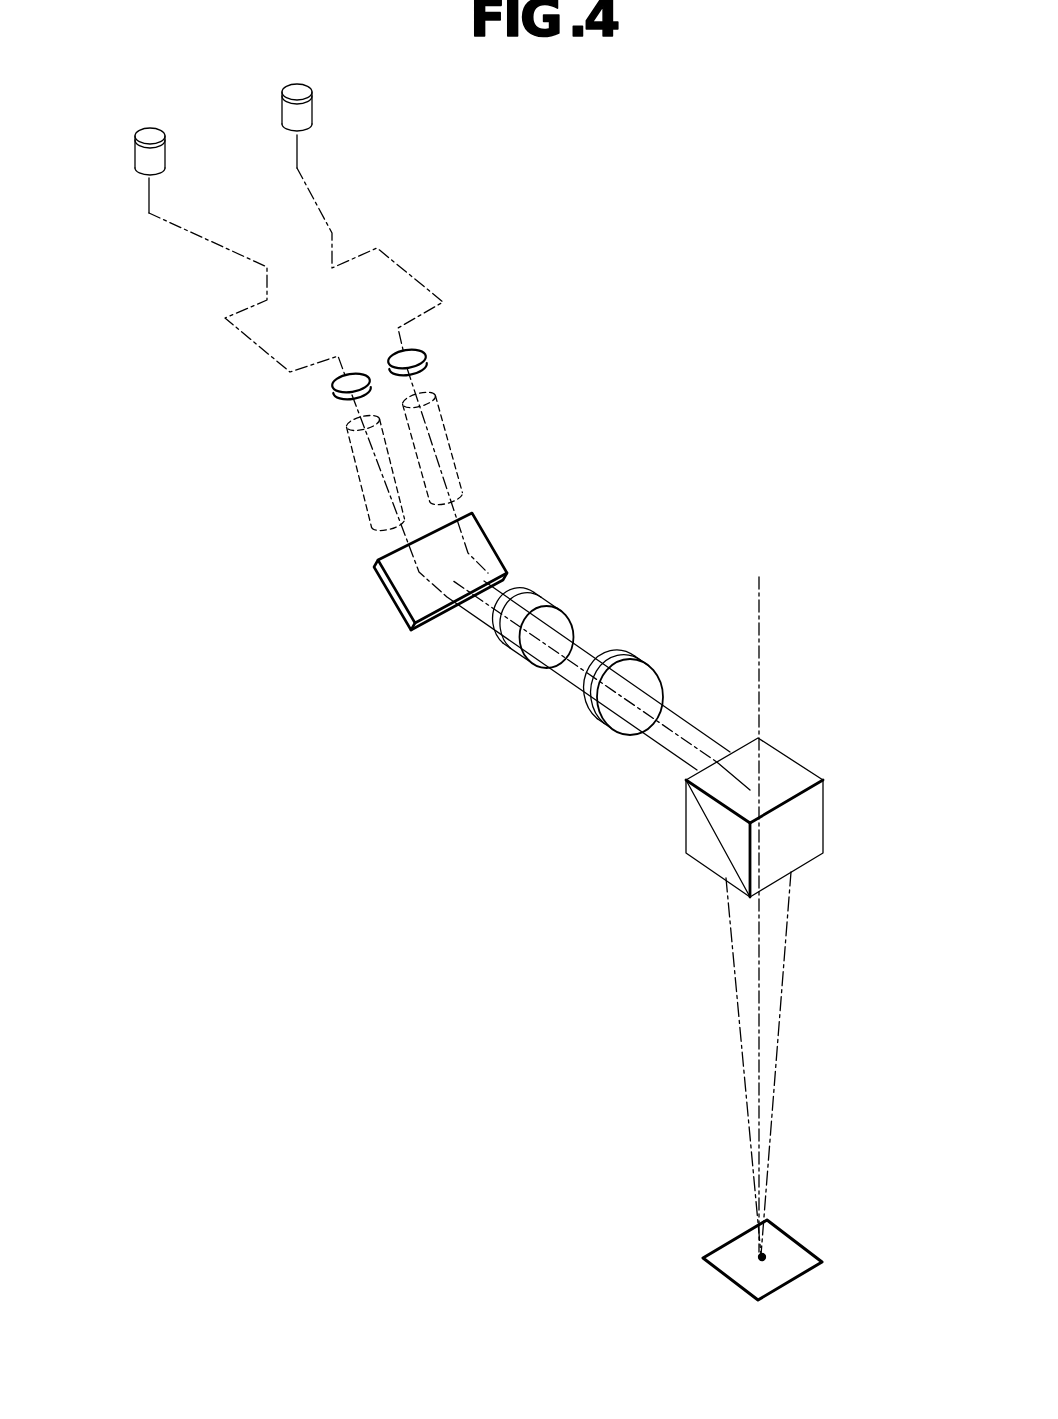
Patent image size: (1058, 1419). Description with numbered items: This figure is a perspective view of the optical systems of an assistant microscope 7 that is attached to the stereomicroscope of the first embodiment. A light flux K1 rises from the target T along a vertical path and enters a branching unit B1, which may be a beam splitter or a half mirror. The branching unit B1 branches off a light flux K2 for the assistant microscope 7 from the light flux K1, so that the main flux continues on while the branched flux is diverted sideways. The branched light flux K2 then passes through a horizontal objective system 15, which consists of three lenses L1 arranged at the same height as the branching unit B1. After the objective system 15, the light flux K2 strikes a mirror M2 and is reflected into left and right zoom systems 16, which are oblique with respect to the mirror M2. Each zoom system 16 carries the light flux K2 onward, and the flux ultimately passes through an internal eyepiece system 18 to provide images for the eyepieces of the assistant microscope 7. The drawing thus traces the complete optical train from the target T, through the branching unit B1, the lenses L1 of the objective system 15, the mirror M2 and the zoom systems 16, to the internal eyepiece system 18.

The assistant microscope 7 is at (516, 421).
The internal eyepiece system 18 is at (296, 381).
The zoom systems 16 is at (295, 388).
The mirror M2 is at (397, 603).
The light flux K2 is at (694, 722).
The horizontal objective system 15 is at (632, 788).
The lenses L1 is at (528, 588).
The branching unit B1 is at (797, 778).
The light flux K1 is at (778, 1037).
The target T is at (797, 1253).